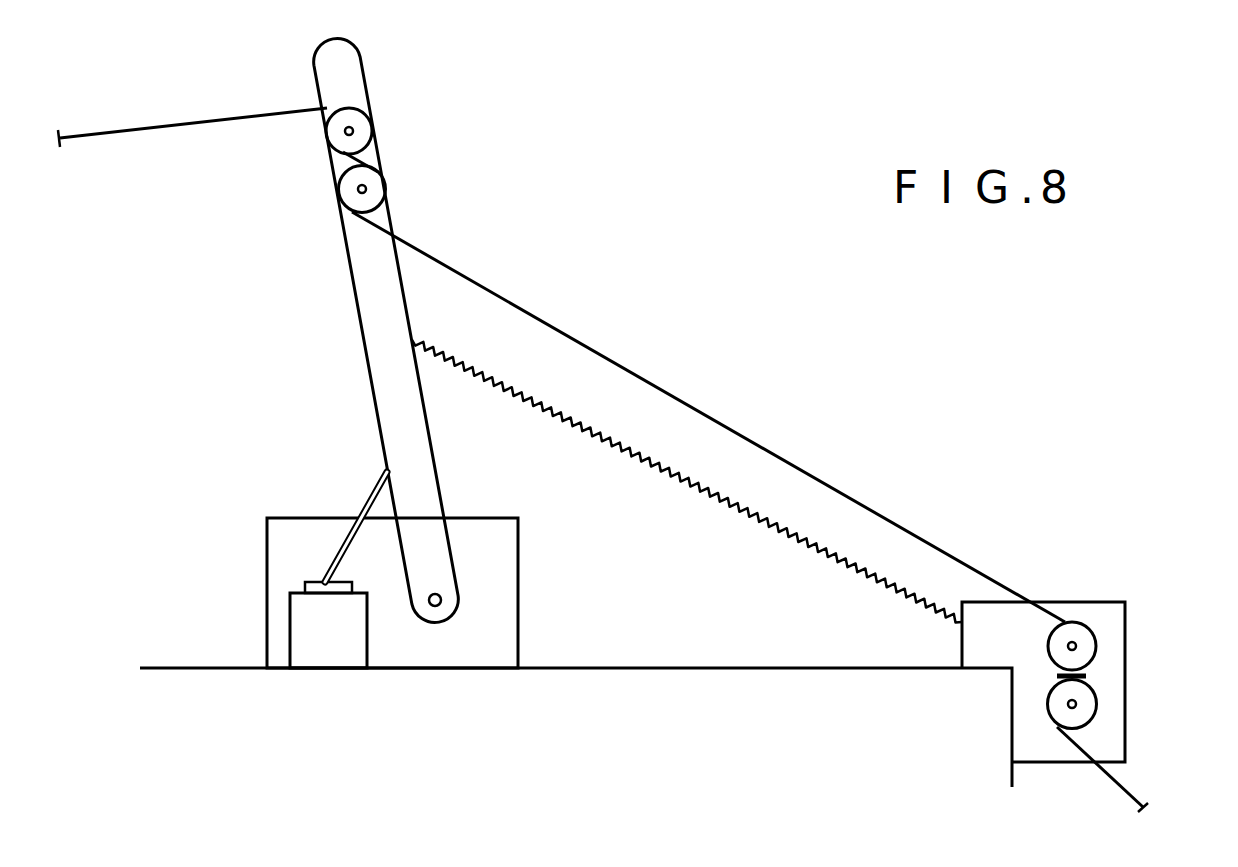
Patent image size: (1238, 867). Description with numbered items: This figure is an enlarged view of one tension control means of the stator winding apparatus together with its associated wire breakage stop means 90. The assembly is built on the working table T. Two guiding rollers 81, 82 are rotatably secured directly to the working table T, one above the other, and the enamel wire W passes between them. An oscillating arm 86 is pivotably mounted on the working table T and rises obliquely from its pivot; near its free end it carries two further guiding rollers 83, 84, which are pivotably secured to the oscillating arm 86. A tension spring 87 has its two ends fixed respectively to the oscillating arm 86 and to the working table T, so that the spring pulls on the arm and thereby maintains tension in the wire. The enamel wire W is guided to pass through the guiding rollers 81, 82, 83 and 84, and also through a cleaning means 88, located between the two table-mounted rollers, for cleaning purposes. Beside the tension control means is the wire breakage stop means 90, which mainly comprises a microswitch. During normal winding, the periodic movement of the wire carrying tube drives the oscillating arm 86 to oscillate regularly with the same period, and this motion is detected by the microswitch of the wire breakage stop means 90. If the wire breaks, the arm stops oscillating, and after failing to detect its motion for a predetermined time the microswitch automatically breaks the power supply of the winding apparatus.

The guiding roller 81 is at (1085, 706).
The guiding roller 82 is at (1092, 640).
The guiding roller 83 is at (378, 187).
The guiding roller 84 is at (362, 127).
The oscillating arm 86 is at (375, 323).
The tension spring 87 is at (683, 482).
The cleaning means 88 is at (1086, 677).
The wire breakage stop means 90 is at (285, 608).
The enamel wire W is at (750, 435).
The working table T is at (722, 662).